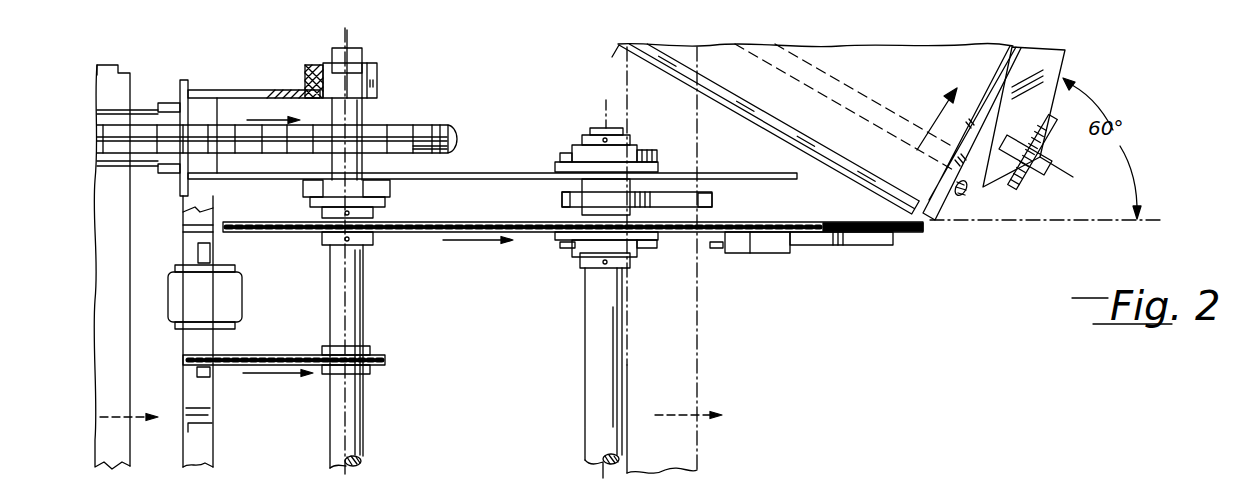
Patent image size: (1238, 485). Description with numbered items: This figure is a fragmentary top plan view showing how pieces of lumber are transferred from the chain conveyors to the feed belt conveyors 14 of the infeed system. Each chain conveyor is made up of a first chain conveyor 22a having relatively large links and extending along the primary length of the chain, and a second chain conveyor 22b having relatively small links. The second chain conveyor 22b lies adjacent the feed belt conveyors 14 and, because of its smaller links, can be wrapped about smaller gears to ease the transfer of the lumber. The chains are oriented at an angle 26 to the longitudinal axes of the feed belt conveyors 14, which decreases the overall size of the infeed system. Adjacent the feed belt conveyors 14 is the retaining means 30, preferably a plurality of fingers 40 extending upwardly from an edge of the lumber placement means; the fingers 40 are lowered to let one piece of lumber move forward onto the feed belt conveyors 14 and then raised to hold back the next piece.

The feed belt conveyors 14 is at (884, 184).
The first chain conveyor 22a is at (413, 137).
The second chain conveyor 22b is at (428, 232).
The angle 26 is at (1133, 172).
The retaining means 30 is at (660, 192).
The fingers 40 is at (714, 200).